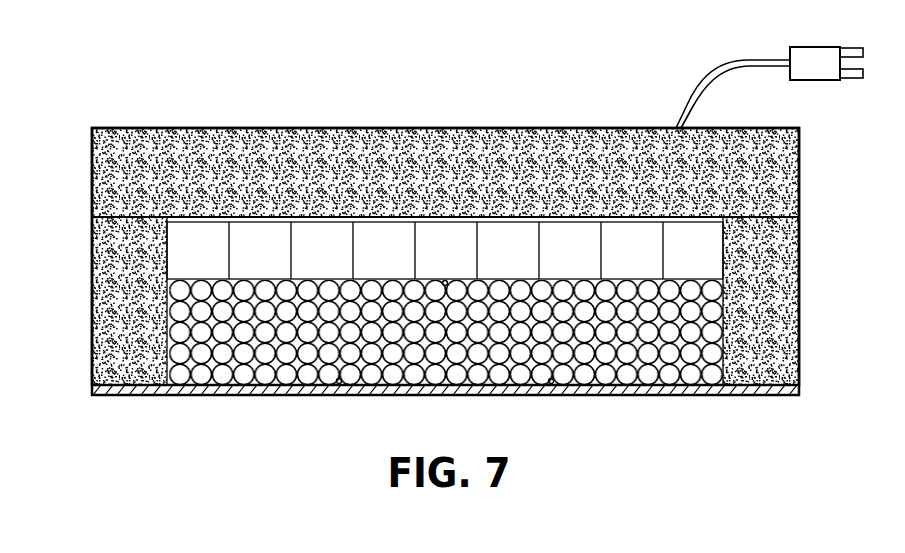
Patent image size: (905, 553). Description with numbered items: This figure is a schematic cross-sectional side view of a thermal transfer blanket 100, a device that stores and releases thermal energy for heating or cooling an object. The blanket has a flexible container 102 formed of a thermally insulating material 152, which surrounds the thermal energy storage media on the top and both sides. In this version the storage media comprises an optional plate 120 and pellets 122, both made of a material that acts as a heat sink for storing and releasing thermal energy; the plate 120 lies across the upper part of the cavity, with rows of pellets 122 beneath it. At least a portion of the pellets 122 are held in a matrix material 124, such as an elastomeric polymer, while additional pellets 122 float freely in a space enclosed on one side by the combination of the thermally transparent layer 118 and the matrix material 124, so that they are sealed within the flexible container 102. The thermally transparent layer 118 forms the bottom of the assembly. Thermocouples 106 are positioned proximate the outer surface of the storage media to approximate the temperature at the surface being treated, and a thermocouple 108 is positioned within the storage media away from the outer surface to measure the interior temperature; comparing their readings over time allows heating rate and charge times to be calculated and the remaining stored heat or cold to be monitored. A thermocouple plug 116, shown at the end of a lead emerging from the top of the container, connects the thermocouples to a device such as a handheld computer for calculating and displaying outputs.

The thermal transfer blanket 100 is at (98, 23).
The flexible container 102 is at (98, 228).
The thermocouple 106 is at (338, 384).
The thermocouple 108 is at (446, 281).
The thermocouple plug 116 is at (812, 47).
The thermally transparent layer 118 is at (370, 393).
The plate 120 is at (710, 250).
The pellets 122 is at (712, 312).
The matrix material 124 is at (656, 382).
The thermally insulating material 152 is at (338, 157).